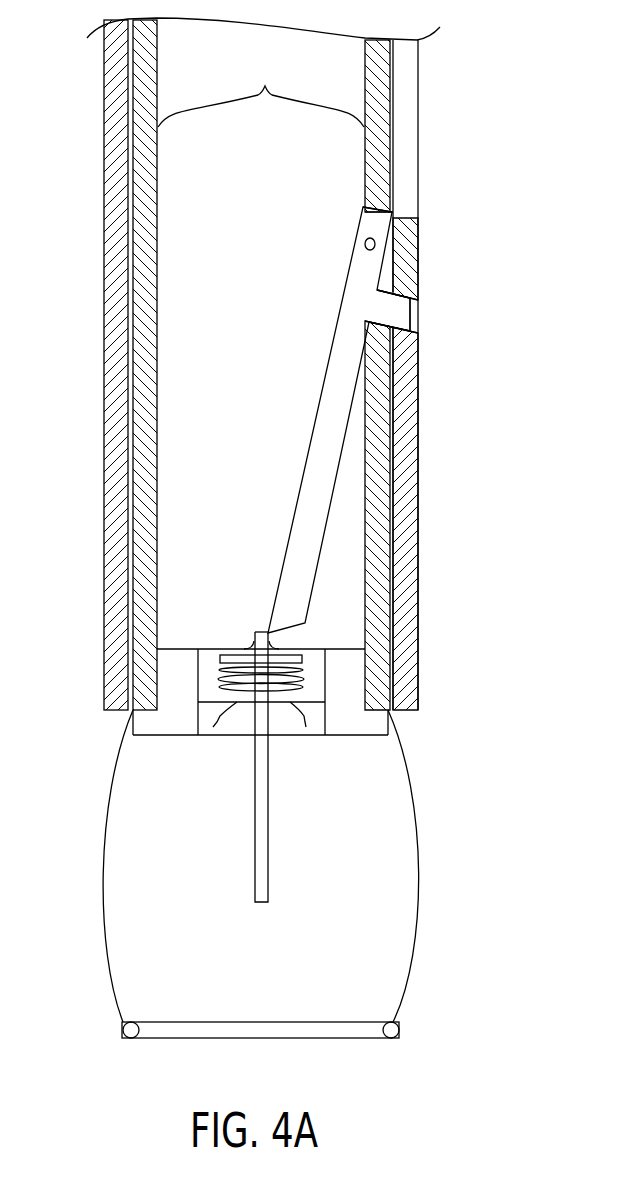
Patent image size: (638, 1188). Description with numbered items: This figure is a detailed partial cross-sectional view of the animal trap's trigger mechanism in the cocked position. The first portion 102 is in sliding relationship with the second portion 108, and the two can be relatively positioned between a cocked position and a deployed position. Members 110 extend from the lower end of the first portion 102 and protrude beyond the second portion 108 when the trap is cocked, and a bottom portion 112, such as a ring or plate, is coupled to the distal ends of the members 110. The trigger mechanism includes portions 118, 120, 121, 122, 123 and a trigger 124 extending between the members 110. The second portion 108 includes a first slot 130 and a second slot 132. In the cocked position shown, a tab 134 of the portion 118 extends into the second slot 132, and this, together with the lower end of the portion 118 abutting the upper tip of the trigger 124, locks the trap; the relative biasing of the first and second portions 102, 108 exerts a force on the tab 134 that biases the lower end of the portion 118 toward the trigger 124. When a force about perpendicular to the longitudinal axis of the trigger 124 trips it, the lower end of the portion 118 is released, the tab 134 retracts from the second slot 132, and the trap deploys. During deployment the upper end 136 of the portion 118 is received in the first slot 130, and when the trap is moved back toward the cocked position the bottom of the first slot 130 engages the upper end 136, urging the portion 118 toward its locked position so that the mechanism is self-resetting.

The first portion 102 is at (261, 365).
The second portion 108 is at (105, 55).
The members 110 is at (103, 890).
The bottom portion 112 is at (357, 1030).
The portion 118 is at (341, 393).
The portion 120 is at (170, 692).
The portion 121 is at (230, 647).
The portion 122 is at (308, 685).
The portion 123 is at (208, 723).
The trigger 124 is at (267, 813).
The first slot 130 is at (414, 120).
The second slot 132 is at (407, 323).
The tab 134 is at (403, 313).
The upper end 136 is at (393, 210).